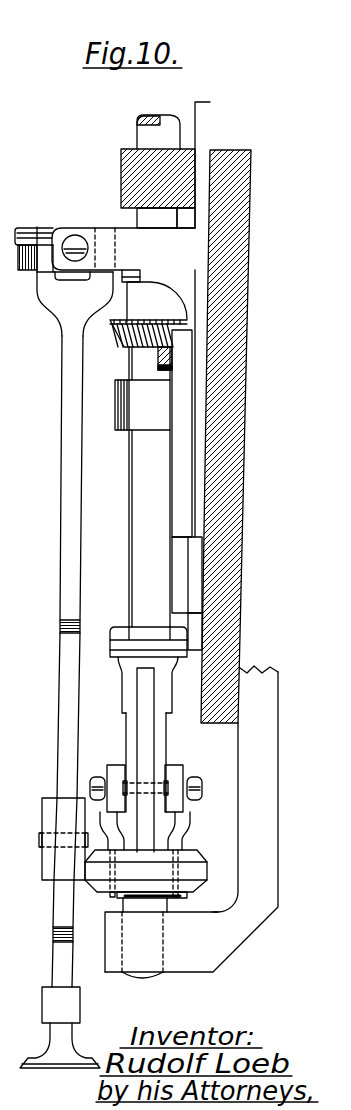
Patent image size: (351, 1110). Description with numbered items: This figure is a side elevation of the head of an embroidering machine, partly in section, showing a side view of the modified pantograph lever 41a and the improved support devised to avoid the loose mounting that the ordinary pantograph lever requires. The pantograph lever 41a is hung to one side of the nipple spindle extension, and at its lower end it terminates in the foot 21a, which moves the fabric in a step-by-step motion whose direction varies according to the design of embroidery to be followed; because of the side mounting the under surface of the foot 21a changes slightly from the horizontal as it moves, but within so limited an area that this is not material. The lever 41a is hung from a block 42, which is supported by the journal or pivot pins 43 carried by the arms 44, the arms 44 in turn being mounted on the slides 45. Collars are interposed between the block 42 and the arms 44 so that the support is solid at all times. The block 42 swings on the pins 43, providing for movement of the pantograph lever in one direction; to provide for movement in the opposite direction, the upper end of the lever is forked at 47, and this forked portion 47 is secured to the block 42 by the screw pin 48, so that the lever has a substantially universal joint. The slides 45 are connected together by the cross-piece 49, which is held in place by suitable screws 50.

The screw pin 48 is at (26, 228).
The block 42 is at (58, 229).
The pivot pins 43 is at (84, 253).
The arms 44 is at (154, 281).
The forked portion 47 is at (75, 290).
The screws 50 is at (151, 428).
The cross-piece 49 is at (142, 405).
The slides 45 is at (200, 398).
The pantograph lever 41a is at (67, 563).
The foot 21a is at (53, 1063).